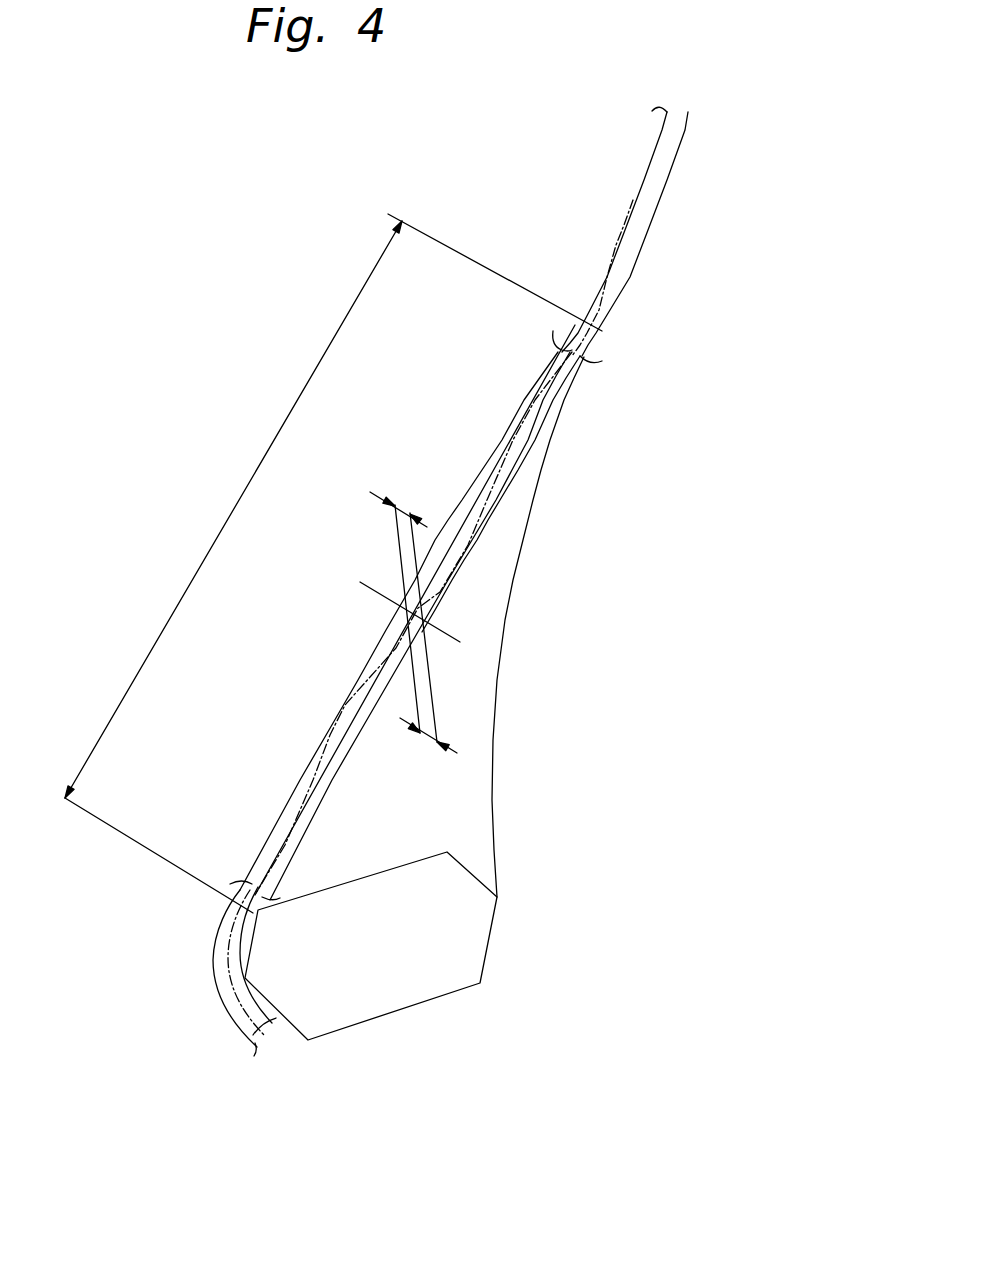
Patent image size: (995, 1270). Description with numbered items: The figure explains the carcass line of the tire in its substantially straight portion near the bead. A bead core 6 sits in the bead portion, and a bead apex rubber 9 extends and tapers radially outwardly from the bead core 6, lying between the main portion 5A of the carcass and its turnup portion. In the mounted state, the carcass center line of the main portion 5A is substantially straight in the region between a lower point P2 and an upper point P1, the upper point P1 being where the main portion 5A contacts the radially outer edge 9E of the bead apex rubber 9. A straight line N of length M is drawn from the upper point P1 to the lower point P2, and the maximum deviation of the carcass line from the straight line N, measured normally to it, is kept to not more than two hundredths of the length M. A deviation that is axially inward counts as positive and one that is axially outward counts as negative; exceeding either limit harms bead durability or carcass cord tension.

The main portion 5A is at (688, 113).
The radially outer edge 9E is at (600, 328).
The upper point P1 is at (573, 302).
The lower point P2 is at (212, 913).
The straight line N is at (497, 470).
The length M is at (230, 513).
The bead apex rubber 9 is at (472, 703).
The bead core 6 is at (399, 993).